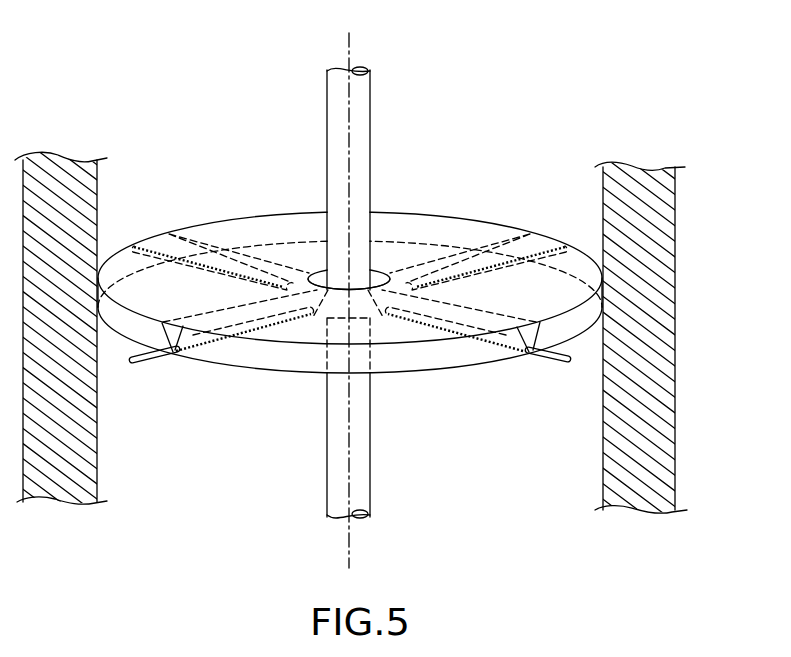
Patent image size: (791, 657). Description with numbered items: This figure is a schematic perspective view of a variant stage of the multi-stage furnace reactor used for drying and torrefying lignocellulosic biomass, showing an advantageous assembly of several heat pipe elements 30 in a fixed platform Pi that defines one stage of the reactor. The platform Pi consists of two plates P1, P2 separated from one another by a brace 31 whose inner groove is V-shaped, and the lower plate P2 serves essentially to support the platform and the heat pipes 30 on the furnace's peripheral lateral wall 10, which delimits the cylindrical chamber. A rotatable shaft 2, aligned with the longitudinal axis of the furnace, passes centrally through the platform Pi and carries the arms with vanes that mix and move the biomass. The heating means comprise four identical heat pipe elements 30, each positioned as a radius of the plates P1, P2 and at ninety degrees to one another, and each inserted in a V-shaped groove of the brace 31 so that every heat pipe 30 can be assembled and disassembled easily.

The shaft 2 is at (357, 92).
The lateral wall 10 is at (658, 228).
The heat pipe element 30 is at (138, 366).
The brace 31 is at (213, 347).
The plate P1 is at (583, 268).
The lower plate P2 is at (466, 376).
The platform Pi is at (585, 318).